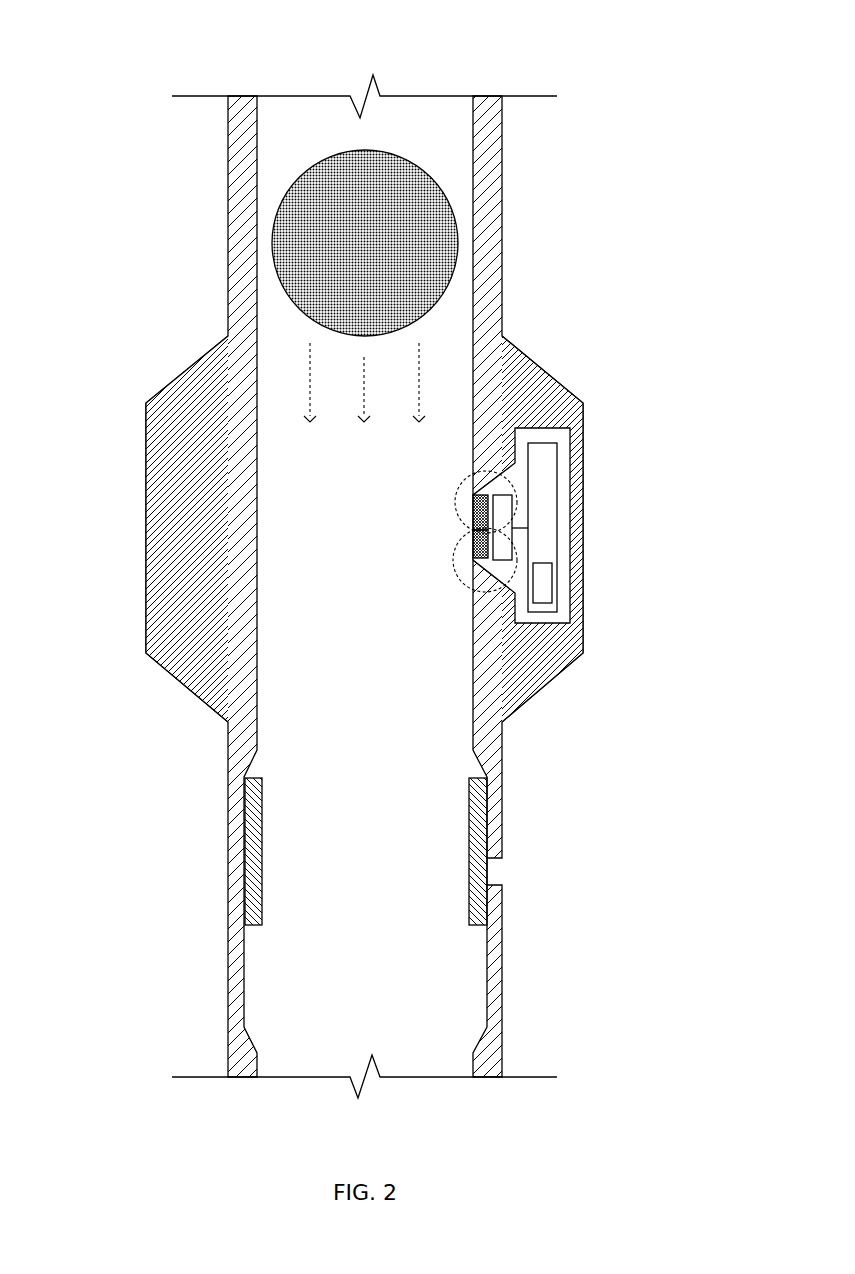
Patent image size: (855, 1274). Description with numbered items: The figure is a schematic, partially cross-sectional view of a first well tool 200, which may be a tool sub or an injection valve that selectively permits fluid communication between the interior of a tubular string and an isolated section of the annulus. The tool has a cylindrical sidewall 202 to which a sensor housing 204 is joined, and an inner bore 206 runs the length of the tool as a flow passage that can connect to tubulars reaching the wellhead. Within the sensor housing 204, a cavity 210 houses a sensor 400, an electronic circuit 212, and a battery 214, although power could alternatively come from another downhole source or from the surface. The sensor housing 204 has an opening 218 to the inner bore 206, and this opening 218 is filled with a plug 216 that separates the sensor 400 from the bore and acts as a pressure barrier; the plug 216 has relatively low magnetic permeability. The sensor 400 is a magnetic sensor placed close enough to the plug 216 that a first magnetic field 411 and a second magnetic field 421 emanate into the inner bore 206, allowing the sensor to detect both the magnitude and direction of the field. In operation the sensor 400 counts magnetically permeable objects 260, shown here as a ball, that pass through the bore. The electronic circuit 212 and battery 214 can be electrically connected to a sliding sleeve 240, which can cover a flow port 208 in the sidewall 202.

The first well tool 200 is at (112, 42).
The cylindrical sidewall 202 is at (495, 215).
The sensor housing 204 is at (542, 365).
The inner bore 206 is at (277, 143).
The flow port 208 is at (508, 873).
The cavity 210 is at (570, 618).
The electronic circuit 212 is at (545, 473).
The battery 214 is at (548, 593).
The plug 216 is at (475, 507).
The opening 218 is at (470, 558).
The sliding sleeve 240 is at (487, 818).
The magnetically permeable object 260 is at (272, 262).
The sensor 400 is at (505, 510).
The first magnetic field 411 is at (470, 474).
The second magnetic field 421 is at (468, 583).